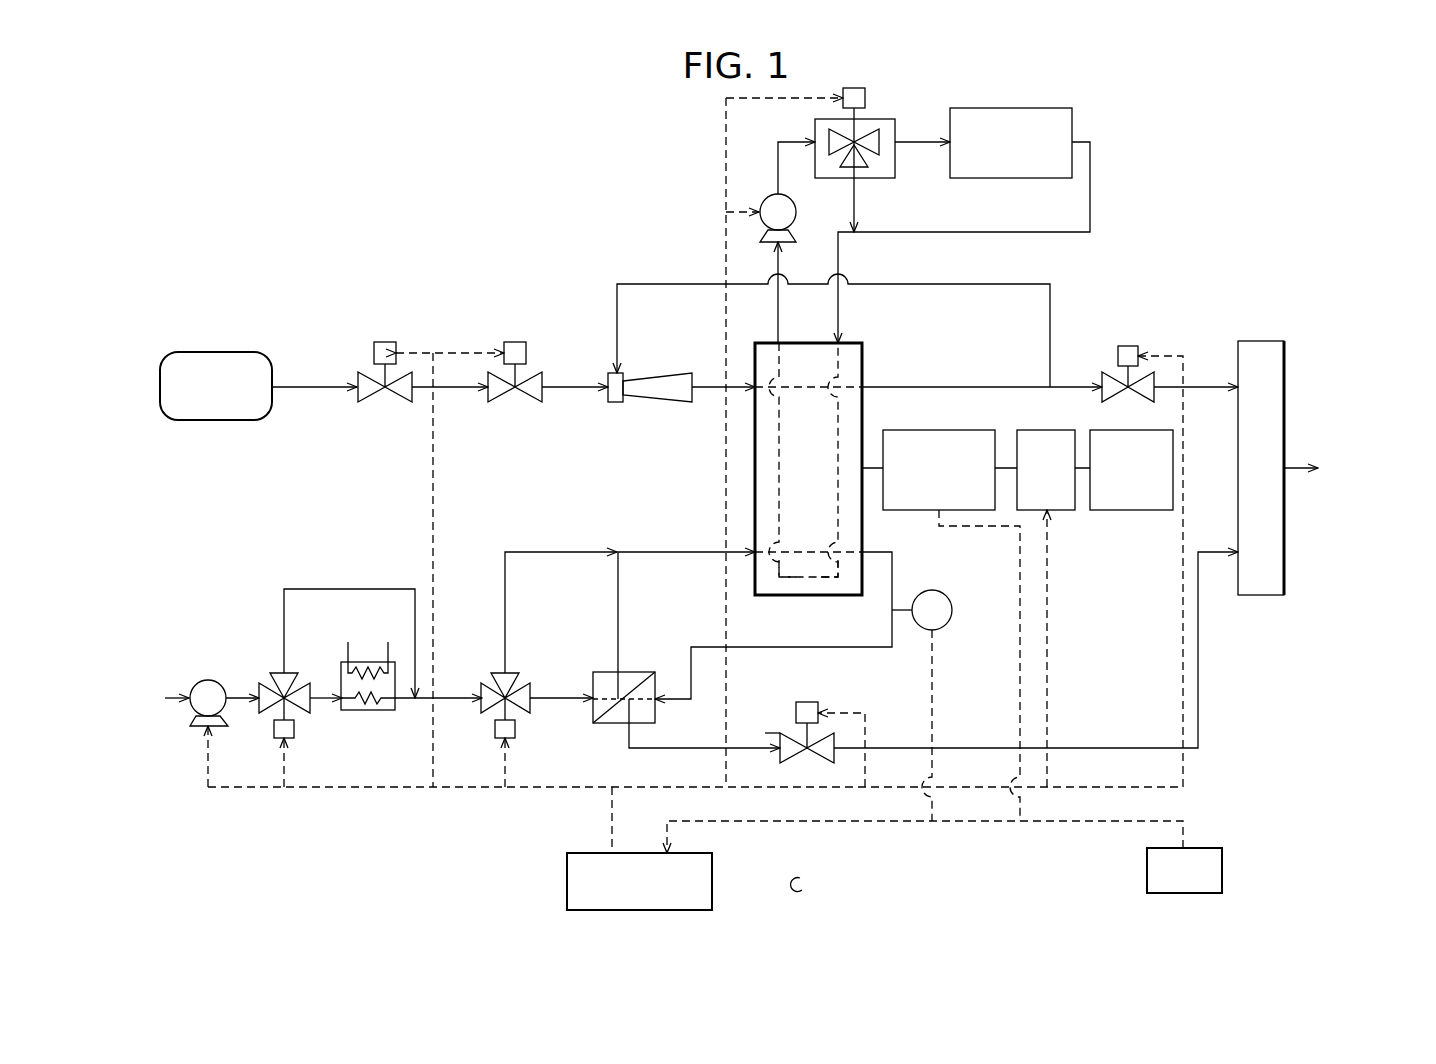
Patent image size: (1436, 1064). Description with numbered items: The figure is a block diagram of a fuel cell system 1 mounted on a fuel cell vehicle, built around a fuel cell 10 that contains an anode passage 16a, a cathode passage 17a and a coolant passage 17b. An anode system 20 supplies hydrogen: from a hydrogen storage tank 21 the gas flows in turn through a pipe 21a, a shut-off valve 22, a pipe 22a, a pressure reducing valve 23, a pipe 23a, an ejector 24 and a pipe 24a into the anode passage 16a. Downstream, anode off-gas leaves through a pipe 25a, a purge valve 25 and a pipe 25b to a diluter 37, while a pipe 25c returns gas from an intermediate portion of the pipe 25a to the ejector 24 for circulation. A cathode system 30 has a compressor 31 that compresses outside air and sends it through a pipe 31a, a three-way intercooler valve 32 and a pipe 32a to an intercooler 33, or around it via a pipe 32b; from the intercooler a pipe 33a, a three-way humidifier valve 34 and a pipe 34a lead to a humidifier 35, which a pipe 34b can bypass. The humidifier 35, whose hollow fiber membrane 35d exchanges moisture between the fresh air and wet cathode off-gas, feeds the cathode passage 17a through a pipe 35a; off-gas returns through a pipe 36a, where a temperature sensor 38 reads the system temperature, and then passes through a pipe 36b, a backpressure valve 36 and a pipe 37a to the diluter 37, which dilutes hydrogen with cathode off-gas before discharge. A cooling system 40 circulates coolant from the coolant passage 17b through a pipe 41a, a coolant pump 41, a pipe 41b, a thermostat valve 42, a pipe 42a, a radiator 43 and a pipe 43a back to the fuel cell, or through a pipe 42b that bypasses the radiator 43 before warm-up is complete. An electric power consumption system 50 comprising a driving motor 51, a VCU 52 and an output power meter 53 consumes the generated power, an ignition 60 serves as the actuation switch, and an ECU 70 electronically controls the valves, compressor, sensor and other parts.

The fuel cell system 1 is at (1118, 155).
The fuel cell 10 is at (750, 450).
The anode passage 16a is at (862, 377).
The cathode passage 17a is at (846, 583).
The coolant passage 17b is at (786, 583).
The anode system 20 is at (198, 318).
The hydrogen storage tank 21 is at (238, 352).
The pipe 21a is at (313, 395).
The shut-off valve 22 is at (385, 342).
The pipe 22a is at (487, 395).
The pressure reducing valve 23 is at (515, 342).
The pipe 23a is at (542, 372).
The ejector 24 is at (645, 373).
The pipe 24a is at (708, 386).
The purge valve 25 is at (1128, 346).
The pipe 25a is at (968, 387).
The pipe 25b is at (1208, 387).
The pipe 25c is at (965, 284).
The cathode system 30 is at (190, 752).
The compressor 31 is at (207, 680).
The pipe 31a is at (238, 692).
The intercooler valve 32 is at (294, 730).
The pipe 32a is at (318, 692).
The pipe 32b is at (322, 589).
The intercooler 33 is at (380, 712).
The pipe 33a is at (460, 705).
The humidifier valve 34 is at (516, 730).
The pipe 34a is at (549, 692).
The pipe 34b is at (507, 584).
The humidifier 35 is at (640, 672).
The pipe 35a is at (648, 552).
The hollow fiber membrane 35d is at (620, 723).
The backpressure valve 36 is at (807, 702).
The pipe 36a is at (892, 568).
The pipe 36b is at (767, 742).
The diluter 37 is at (1258, 341).
The pipe 37a is at (1208, 552).
The temperature sensor 38 is at (950, 628).
The cooling system 40 is at (648, 168).
The coolant pump 41 is at (796, 208).
The pipe 41a is at (781, 333).
The pipe 41b is at (778, 160).
The thermostat valve 42 is at (876, 118).
The pipe 42a is at (921, 135).
The pipe 42b is at (856, 204).
The radiator 43 is at (1010, 110).
The pipe 43a is at (983, 232).
The electric power consumption system 50 is at (1090, 545).
The driving motor 51 is at (1117, 510).
The VCU 52 is at (1036, 430).
The output power meter 53 is at (948, 430).
The ignition 60 is at (1222, 871).
The ECU 70 is at (712, 879).